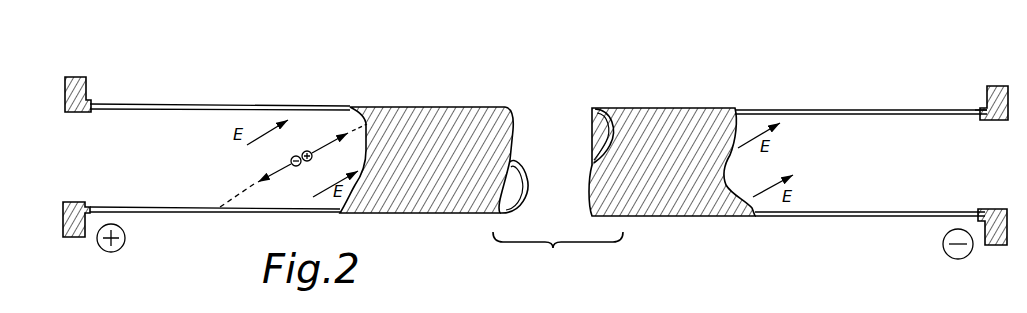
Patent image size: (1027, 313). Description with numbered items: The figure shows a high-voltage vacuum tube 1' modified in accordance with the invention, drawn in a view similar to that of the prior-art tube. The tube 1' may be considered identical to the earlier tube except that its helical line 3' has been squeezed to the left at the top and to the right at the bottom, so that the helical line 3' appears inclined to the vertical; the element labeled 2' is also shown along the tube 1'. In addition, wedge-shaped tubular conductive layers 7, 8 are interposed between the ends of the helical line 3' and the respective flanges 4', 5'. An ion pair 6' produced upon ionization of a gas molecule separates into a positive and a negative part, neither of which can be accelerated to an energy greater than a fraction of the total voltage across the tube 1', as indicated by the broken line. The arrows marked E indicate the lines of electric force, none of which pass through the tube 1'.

The vacuum tube 1' is at (547, 129).
The upper right electrode 2' is at (861, 102).
The helical line 3' is at (220, 84).
The flange 4' is at (90, 77).
The flange 5' is at (994, 77).
The ion pair 6' is at (293, 140).
The wedge-shaped tubular conductive layer 7 is at (138, 212).
The wedge-shaped tubular conductive layer 8 is at (938, 110).